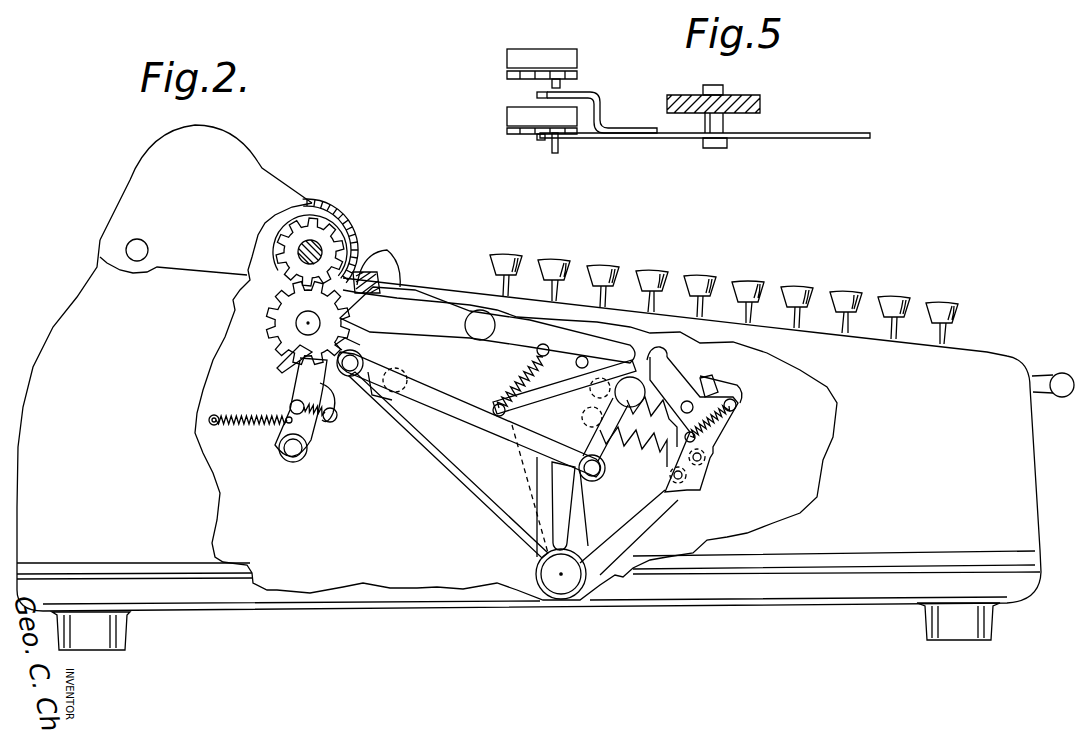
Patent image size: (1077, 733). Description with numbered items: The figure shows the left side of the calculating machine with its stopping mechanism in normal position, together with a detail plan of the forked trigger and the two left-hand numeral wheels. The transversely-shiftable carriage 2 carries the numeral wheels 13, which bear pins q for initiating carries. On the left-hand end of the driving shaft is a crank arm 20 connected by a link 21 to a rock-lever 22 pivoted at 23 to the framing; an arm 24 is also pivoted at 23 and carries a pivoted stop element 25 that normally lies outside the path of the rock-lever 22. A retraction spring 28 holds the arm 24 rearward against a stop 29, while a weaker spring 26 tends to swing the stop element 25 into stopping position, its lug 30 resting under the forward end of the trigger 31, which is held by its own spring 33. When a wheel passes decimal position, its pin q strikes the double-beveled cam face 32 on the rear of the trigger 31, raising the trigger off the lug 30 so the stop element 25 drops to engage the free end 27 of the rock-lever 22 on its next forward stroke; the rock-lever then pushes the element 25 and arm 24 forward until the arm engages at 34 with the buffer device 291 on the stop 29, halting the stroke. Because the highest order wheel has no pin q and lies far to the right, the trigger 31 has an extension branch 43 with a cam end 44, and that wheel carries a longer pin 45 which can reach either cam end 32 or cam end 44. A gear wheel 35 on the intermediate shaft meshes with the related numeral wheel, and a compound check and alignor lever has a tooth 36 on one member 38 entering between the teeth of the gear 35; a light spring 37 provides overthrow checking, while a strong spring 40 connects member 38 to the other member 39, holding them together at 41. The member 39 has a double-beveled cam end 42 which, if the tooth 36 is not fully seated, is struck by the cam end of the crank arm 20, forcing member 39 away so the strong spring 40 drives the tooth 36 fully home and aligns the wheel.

In FIG. 2, the transversely-shiftable carriage 2 is at (132, 182).
In FIG. 2, the numeral wheels 13 is at (327, 222).
In FIG. 5, the numeral wheels 13 is at (508, 61).
In FIG. 2, the pins q is at (330, 297).
In FIG. 5, the pins q is at (562, 85).
In FIG. 2, the trigger 31 is at (437, 316).
In FIG. 5, the trigger 31 is at (808, 132).
In FIG. 2, the double-beveled cam face 32 is at (275, 306).
In FIG. 5, the double-beveled cam face 32 is at (540, 141).
In FIG. 2, the gear wheel 35 is at (273, 338).
In FIG. 2, the tooth 36 is at (383, 358).
In FIG. 2, the double-beveled cam end 42 is at (300, 360).
In FIG. 2, the strong spring 40 is at (288, 406).
In FIG. 2, the spring 37 is at (245, 426).
In FIG. 2, the member 39 is at (283, 445).
In FIG. 2, the member 38 is at (325, 432).
In FIG. 2, the contact point 41 is at (344, 420).
In FIG. 2, the crank arm 20 is at (362, 392).
In FIG. 2, the link 21 is at (426, 416).
In FIG. 2, the spring 33 is at (515, 390).
In FIG. 2, the stop element 25 is at (541, 400).
In FIG. 2, the engagement point 34 is at (668, 356).
In FIG. 2, the buffer device 291 is at (713, 383).
In FIG. 2, the lug 30 is at (663, 366).
In FIG. 2, the stop 29 is at (732, 392).
In FIG. 2, the spring 26 is at (720, 440).
In FIG. 2, the free end 27 is at (532, 455).
In FIG. 2, the retraction spring 28 is at (647, 423).
In FIG. 2, the rock-lever 22 is at (535, 517).
In FIG. 2, the arm 24 is at (633, 518).
In FIG. 2, the pivot 23 is at (561, 586).
In FIG. 5, the double-beveled cam end 44 is at (536, 95).
In FIG. 5, the extension branch 43 is at (601, 108).
In FIG. 5, the pin 45 is at (559, 152).